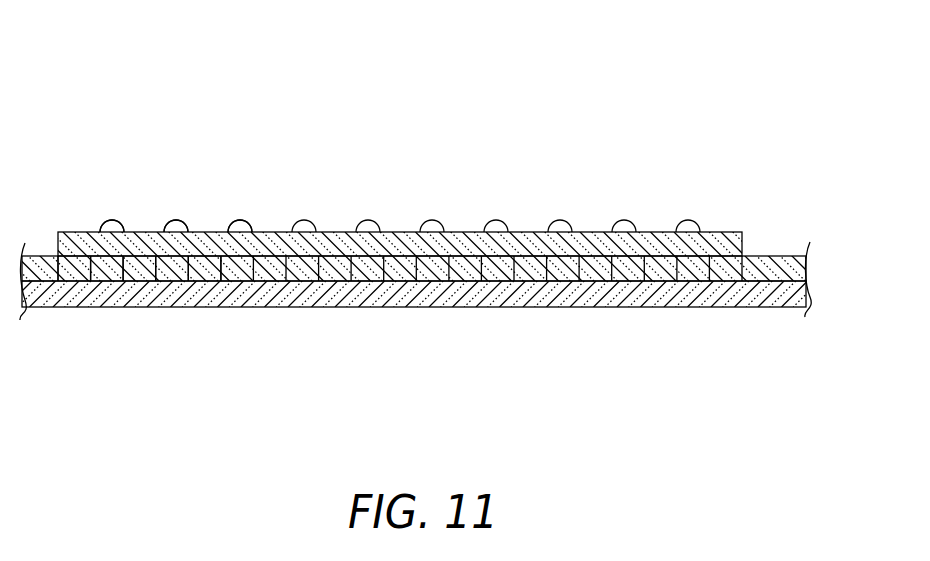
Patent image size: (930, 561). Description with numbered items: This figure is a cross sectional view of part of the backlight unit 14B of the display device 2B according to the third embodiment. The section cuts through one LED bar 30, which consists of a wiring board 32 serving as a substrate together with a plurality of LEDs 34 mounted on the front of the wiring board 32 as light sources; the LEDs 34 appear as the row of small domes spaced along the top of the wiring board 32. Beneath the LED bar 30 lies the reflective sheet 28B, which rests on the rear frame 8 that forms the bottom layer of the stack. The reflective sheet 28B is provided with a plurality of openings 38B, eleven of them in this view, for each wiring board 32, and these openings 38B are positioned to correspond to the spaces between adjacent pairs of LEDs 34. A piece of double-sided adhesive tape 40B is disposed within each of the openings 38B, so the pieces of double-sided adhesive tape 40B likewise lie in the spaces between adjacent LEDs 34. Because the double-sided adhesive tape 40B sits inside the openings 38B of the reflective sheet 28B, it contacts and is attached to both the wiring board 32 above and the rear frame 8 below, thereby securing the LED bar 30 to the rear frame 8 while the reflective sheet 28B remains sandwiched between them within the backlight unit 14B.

The display device 2B is at (565, 60).
The backlight unit 14B is at (652, 135).
The reflective sheet 28B is at (760, 260).
The rear frame 8 is at (745, 293).
The LED bar 30 is at (552, 110).
The wiring board 32 is at (528, 232).
The LED 34 is at (492, 217).
The double-sided adhesive tape 40B is at (205, 256).
The opening 38B is at (70, 256).